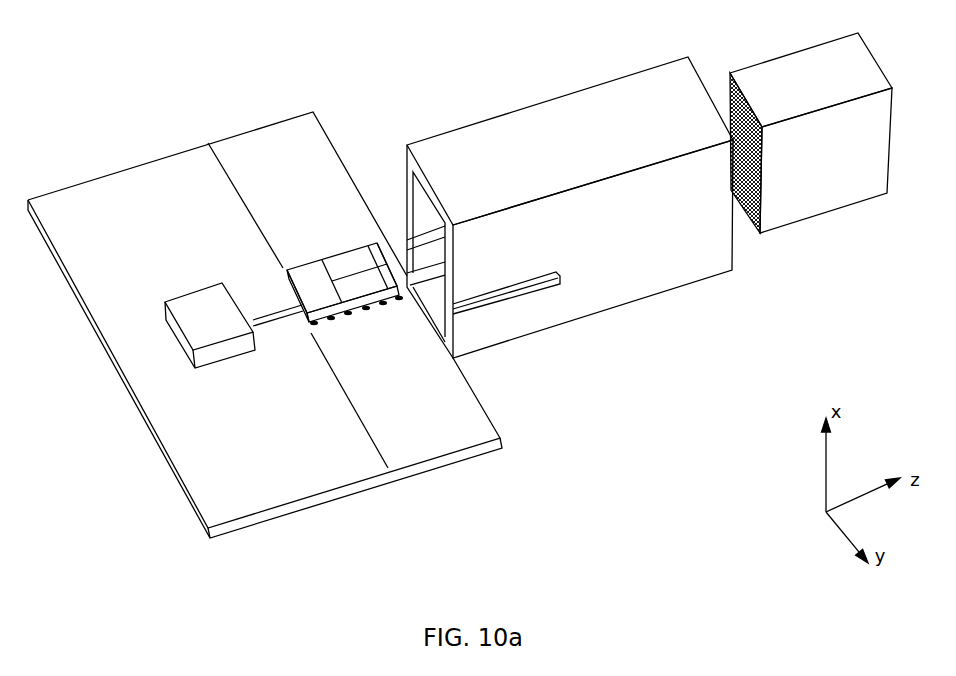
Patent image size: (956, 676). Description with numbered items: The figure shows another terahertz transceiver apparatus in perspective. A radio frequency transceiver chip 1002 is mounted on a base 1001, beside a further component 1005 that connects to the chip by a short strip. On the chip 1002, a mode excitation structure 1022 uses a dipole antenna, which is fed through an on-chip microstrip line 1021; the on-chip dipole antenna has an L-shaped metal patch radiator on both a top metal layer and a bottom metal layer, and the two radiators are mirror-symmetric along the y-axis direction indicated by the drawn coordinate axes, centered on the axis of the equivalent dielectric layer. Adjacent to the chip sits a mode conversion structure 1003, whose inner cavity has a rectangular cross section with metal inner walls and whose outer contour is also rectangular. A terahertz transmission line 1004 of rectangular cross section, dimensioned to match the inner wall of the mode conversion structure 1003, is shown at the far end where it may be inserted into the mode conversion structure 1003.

The base substrate 1001 is at (468, 412).
The radio frequency transceiver chip 1002 is at (371, 282).
The on-chip microstrip line 1021 is at (343, 275).
The mode excitation structure 1022 is at (392, 245).
The mode conversion structure 1003 is at (600, 257).
The terahertz transmission line 1004 is at (835, 165).
The electronic chip 1005 is at (215, 355).